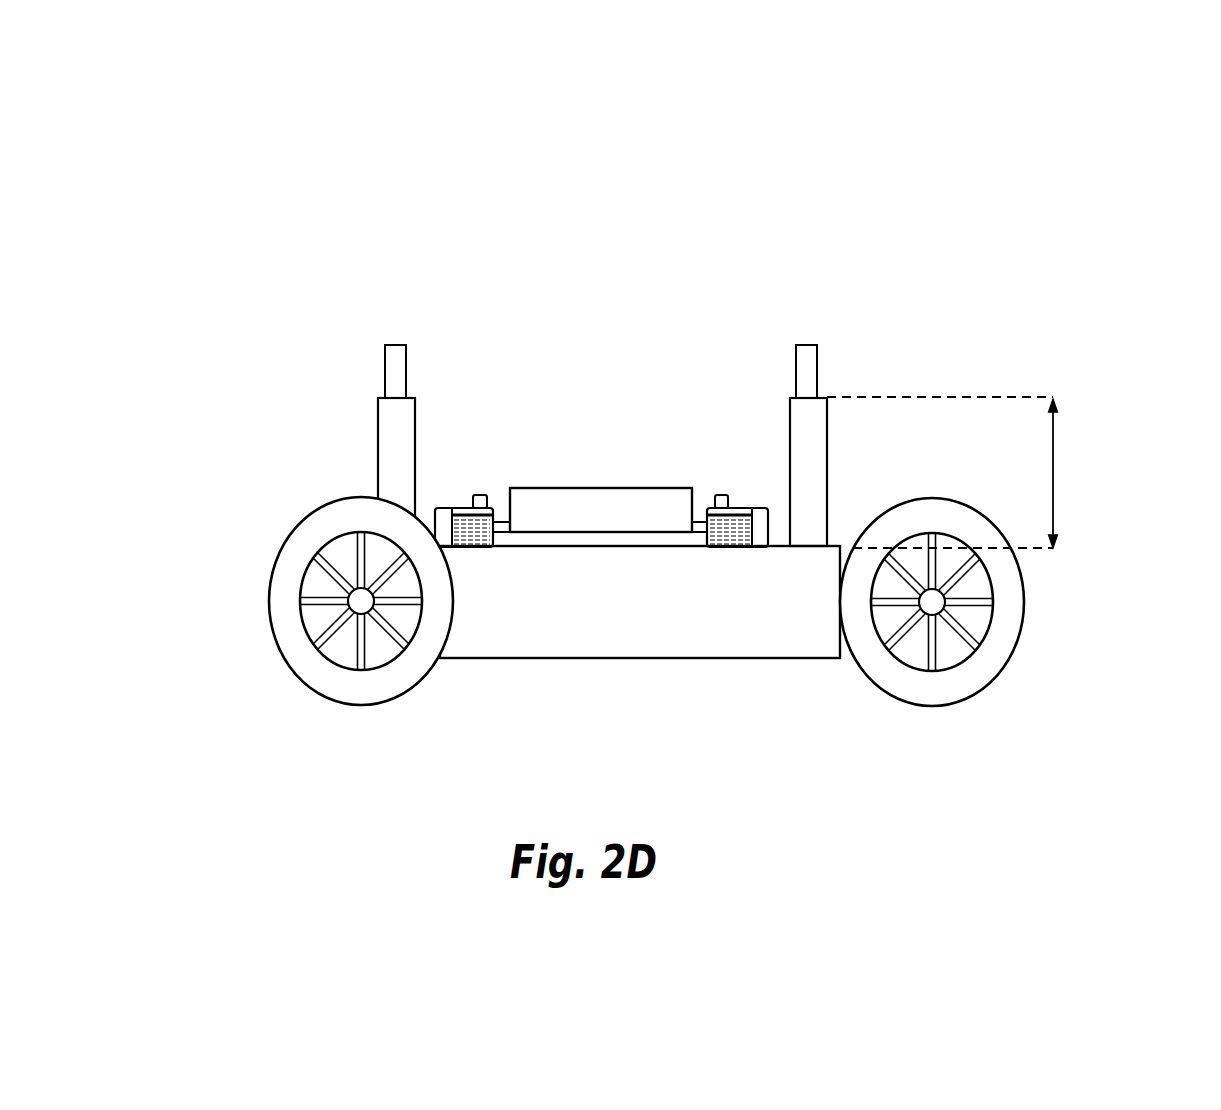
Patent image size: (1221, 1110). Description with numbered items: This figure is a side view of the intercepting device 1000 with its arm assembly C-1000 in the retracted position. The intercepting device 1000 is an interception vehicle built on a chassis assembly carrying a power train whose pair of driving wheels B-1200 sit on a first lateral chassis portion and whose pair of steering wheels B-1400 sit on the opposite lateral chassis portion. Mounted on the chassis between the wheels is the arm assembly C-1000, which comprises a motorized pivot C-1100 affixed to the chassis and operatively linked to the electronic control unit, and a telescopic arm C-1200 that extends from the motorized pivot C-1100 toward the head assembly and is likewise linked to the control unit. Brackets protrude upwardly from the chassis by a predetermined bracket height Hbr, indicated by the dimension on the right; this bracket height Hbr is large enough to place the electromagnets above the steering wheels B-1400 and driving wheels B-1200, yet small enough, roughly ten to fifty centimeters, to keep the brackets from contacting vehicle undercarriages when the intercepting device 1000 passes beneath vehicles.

The intercepting device 1000 is at (1064, 132).
The pair of driving wheels B-1200 is at (326, 456).
The pair of steering wheels B-1400 is at (1063, 646).
The arm assembly C-1000 is at (787, 283).
The motorized pivot C-1100 is at (743, 502).
The telescopic arm C-1200 is at (610, 487).
The predetermined bracket height Hbr is at (974, 472).